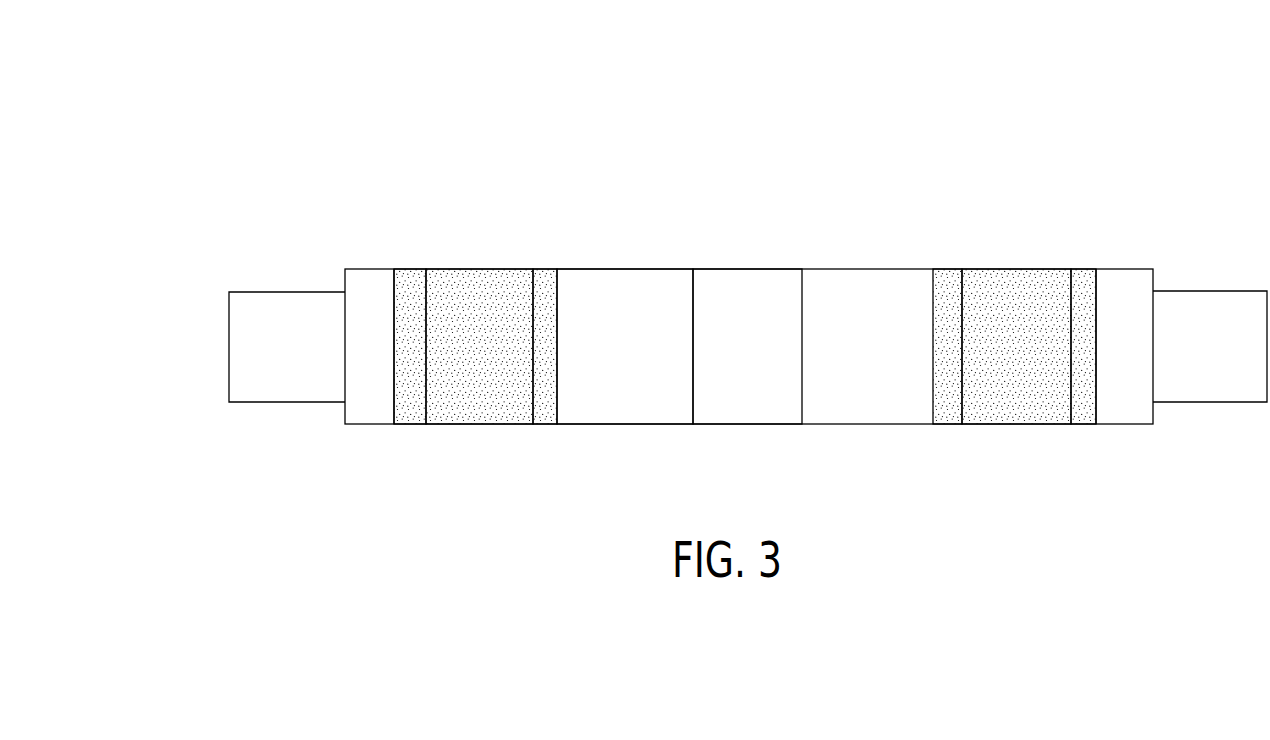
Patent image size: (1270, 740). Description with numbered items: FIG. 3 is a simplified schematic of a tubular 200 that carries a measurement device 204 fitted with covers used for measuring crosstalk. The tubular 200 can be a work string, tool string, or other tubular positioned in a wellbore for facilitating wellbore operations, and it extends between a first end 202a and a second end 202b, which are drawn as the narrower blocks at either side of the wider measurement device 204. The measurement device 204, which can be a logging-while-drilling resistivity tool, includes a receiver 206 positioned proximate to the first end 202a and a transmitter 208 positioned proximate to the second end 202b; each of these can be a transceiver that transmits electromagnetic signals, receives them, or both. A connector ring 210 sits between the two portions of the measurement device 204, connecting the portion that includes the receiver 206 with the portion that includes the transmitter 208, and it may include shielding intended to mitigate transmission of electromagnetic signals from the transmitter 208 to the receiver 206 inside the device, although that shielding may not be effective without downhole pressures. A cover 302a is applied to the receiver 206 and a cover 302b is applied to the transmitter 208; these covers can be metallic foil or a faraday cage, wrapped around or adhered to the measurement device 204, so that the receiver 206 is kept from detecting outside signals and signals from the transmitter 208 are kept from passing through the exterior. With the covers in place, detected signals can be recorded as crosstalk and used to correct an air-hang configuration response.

The tubular 200 is at (262, 116).
The first end 202a is at (293, 310).
The second end 202b is at (1195, 311).
The measurement device 204 is at (618, 283).
The receiver 206 is at (480, 283).
The transmitter 208 is at (1027, 283).
The connector ring 210 is at (750, 283).
The cover 302a is at (555, 340).
The cover 302b is at (942, 345).